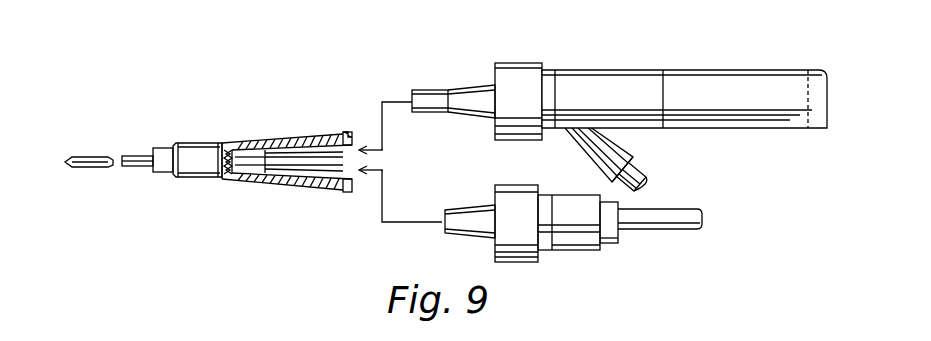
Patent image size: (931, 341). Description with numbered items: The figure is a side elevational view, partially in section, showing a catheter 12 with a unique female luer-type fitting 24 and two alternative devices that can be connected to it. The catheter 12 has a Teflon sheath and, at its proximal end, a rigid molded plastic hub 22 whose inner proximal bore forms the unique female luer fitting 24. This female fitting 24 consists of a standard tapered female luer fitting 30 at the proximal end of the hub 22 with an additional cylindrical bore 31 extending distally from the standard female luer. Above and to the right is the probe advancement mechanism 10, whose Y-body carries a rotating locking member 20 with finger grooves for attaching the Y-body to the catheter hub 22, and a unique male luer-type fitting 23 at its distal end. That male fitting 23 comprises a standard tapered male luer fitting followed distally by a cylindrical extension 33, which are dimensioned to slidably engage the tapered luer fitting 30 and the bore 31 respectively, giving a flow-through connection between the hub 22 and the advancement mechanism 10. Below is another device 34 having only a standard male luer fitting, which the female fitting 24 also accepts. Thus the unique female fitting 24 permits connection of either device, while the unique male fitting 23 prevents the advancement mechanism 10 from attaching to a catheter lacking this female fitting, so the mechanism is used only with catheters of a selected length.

The advancement mechanism 10 is at (700, 66).
The catheter 12 is at (206, 200).
The rotating locking member 20 is at (523, 62).
The catheter hub 22 is at (305, 182).
The male luer-type fitting 23 is at (440, 104).
The female luer-type fitting 24 is at (355, 140).
The tapered female luer fitting 30 is at (310, 153).
The cylindrical bore 31 is at (250, 156).
The cylindrical extension 33 is at (425, 90).
The device 34 is at (567, 228).